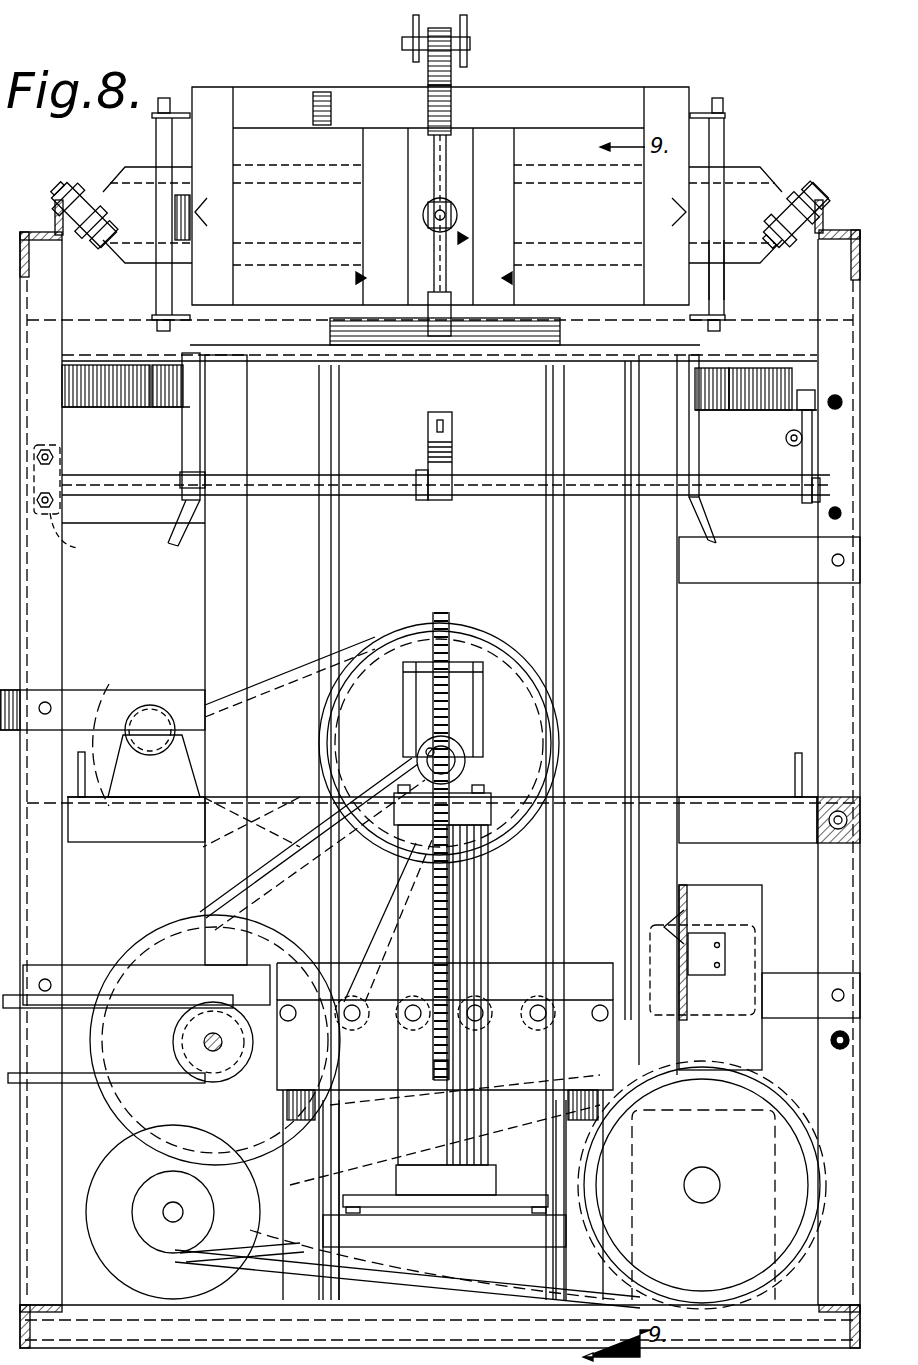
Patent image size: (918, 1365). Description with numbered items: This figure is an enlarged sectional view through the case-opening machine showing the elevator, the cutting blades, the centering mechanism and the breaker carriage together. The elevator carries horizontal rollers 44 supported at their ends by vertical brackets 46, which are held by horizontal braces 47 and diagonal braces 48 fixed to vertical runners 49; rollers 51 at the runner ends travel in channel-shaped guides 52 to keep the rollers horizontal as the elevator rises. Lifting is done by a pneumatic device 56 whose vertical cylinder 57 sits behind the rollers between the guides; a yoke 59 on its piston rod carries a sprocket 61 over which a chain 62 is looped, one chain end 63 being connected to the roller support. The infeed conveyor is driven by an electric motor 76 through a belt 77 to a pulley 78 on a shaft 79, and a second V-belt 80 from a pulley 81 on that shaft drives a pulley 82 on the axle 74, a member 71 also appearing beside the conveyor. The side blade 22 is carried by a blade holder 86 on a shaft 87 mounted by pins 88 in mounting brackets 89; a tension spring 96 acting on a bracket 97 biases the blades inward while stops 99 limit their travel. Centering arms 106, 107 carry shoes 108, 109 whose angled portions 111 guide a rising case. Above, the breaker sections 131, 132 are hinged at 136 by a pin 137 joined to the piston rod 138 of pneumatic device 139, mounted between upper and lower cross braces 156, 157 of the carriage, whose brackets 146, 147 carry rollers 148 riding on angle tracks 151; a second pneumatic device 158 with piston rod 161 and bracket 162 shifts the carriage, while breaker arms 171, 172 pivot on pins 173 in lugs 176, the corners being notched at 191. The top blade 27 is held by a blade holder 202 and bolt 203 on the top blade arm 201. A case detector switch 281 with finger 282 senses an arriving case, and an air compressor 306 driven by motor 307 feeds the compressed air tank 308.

The blade 22 is at (444, 426).
The top blade 27 is at (428, 90).
The rollers 44 is at (478, 1030).
The brackets 46 is at (520, 1008).
The horizontally extending braces 47 is at (284, 1095).
The diagonally extending braces 48 is at (290, 1187).
The runners 49 is at (302, 952).
The rollers 51 is at (320, 962).
The channel shaped guides 52 is at (318, 570).
The pneumatic device 56 is at (496, 903).
The cylinder 57 is at (497, 846).
The yoke 59 is at (483, 692).
The sprocket 61 is at (445, 615).
The chain 62 is at (470, 917).
The chain end 63 is at (438, 1078).
The bar 71 is at (77, 1083).
The axle 74 is at (206, 1042).
The electric motor 76 is at (152, 670).
The belt 77 is at (278, 672).
The pulley 78 is at (504, 668).
The shaft 79 is at (424, 752).
The second V-belt 80 is at (196, 897).
The pulley 81 is at (465, 766).
The pulley 82 is at (162, 950).
The blade holder 86 is at (452, 466).
The shaft 87 is at (366, 476).
The pins 88 is at (62, 479).
The mounting brackets 89 is at (80, 541).
The tension spring 96 is at (789, 445).
The bracket 97 is at (806, 470).
The stops 99 is at (801, 390).
The centering arm 106 is at (117, 399).
The centering arm 107 is at (764, 396).
The shoe 108 is at (200, 434).
The shoe 109 is at (689, 440).
The angled portions 111 is at (202, 526).
The section 131 is at (286, 92).
The section 132 is at (582, 92).
The hinge 136 is at (452, 120).
The pin 137 is at (447, 156).
The piston rod 138 is at (452, 213).
The pneumatic device 139 is at (423, 213).
The roller mounting bracket 146 is at (108, 196).
The roller mounting bracket 147 is at (762, 190).
The rollers 148 is at (98, 222).
The track 151 is at (55, 214).
The upper cross brace 156 is at (578, 172).
The lower cross brace 157 is at (583, 255).
The pneumatic device 158 is at (356, 280).
The piston rod 161 is at (508, 280).
The bracket 162 is at (466, 238).
The breaker arm 171 is at (196, 202).
The breaker arm 172 is at (712, 242).
The pin 173 is at (163, 98).
The lugs 176 is at (182, 112).
The notch 191 is at (198, 220).
The top blade arm 201 is at (470, 64).
The blade holder 202 is at (413, 28).
The bolt 203 is at (467, 27).
The case detector switch 281 is at (752, 919).
The finger 282 is at (708, 972).
The air compressor 306 is at (758, 1269).
The electric motor 307 is at (206, 1292).
The compressed air tank 308 is at (520, 1268).